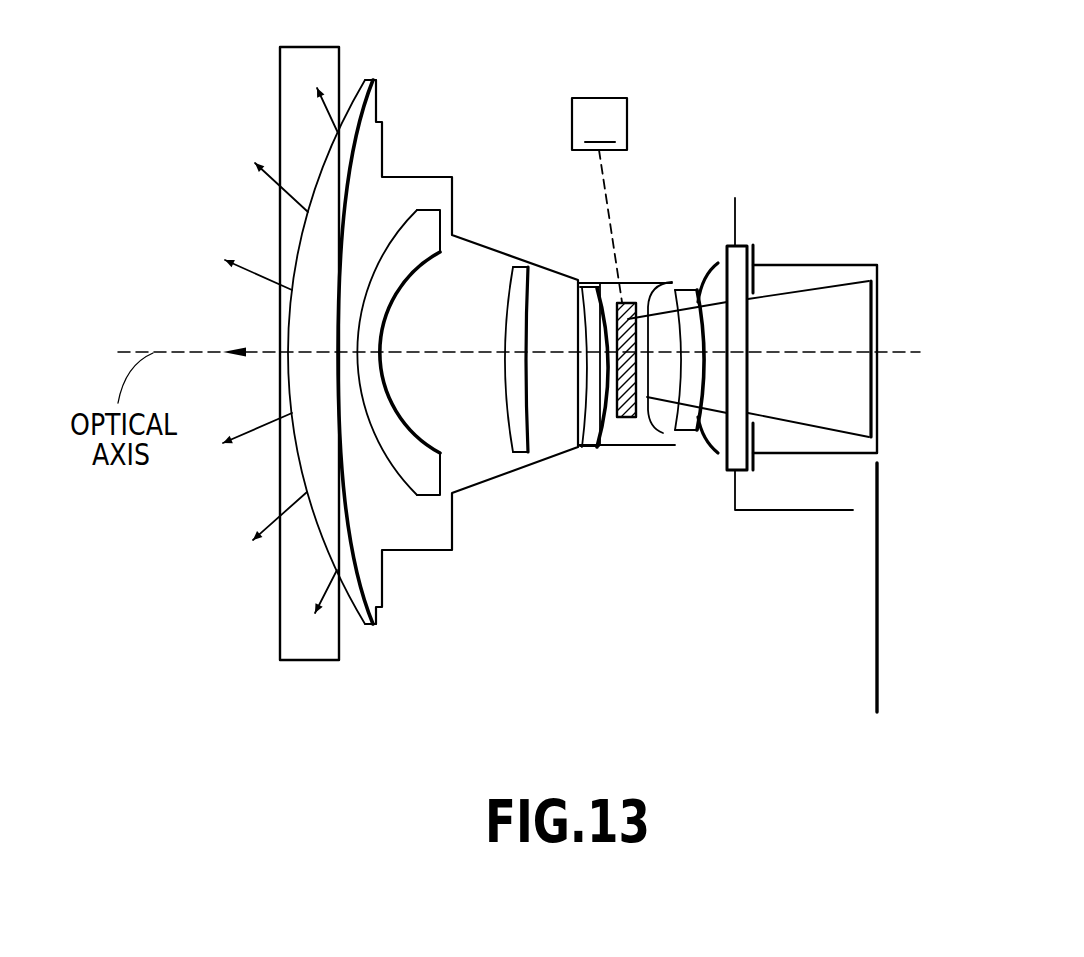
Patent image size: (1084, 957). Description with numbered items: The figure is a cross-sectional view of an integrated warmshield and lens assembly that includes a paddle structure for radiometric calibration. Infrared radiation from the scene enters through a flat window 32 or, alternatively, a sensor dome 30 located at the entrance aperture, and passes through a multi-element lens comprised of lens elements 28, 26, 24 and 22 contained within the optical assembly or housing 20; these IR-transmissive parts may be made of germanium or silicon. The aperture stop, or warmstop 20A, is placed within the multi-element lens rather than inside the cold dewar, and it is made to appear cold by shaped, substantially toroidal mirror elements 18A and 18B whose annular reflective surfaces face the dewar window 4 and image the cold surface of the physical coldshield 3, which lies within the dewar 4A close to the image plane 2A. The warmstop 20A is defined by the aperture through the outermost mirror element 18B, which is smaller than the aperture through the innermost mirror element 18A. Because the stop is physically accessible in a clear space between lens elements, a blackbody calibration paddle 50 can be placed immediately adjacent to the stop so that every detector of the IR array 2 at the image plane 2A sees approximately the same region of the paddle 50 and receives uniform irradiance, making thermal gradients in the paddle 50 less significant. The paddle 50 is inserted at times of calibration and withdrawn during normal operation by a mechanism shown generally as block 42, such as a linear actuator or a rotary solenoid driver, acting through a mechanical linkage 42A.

The IR array 2 is at (880, 332).
The image plane 2A is at (872, 657).
The coldshield 3 is at (842, 264).
The dewar window 4 is at (743, 245).
The dewar 4A is at (762, 510).
The innermost mirror element 18A is at (712, 440).
The outermost mirror element 18B is at (652, 422).
The optical assembly housing 20 is at (452, 530).
The warmstop 20A is at (634, 268).
The lens element 22 is at (695, 290).
The lens element 24 is at (592, 285).
The lens element 26 is at (518, 267).
The lens element 28 is at (438, 217).
The sensor dome 30 is at (380, 102).
The flat window 32 is at (345, 52).
The paddle moving mechanism 42 is at (599, 124).
The mechanical linkage 42A is at (600, 151).
The calibration paddle 50 is at (627, 420).